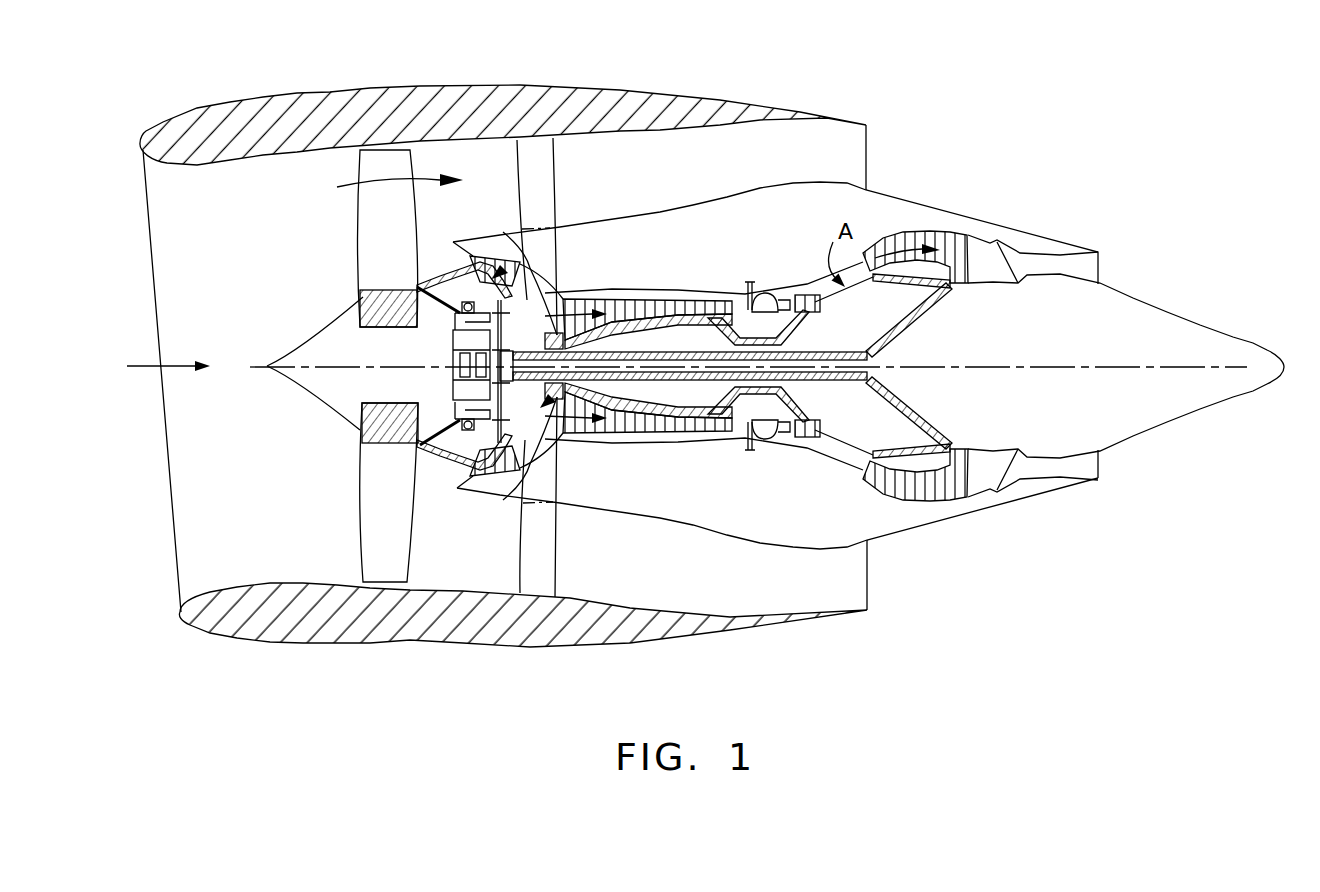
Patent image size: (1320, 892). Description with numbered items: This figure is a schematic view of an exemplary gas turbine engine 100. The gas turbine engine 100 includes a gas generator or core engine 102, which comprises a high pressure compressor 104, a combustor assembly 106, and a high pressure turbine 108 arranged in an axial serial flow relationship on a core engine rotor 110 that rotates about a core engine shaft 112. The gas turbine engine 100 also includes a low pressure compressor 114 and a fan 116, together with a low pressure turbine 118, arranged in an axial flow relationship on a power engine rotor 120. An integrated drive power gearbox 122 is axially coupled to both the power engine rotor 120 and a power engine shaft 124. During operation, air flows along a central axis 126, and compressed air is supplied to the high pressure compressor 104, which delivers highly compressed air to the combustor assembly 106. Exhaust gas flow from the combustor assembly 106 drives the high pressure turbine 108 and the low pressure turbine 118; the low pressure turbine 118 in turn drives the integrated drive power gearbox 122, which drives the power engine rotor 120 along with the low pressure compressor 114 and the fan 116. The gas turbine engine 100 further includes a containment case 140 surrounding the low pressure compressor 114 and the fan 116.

The gas turbine engine 100 is at (1018, 108).
The core engine 102 is at (749, 473).
The high pressure compressor 104 is at (573, 297).
The combustor assembly 106 is at (762, 296).
The high pressure turbine 108 is at (807, 285).
The core engine rotor 110 is at (820, 405).
The core engine shaft 112 is at (805, 330).
The low pressure compressor 114 is at (490, 255).
The fan 116 is at (360, 230).
The low pressure turbine 118 is at (943, 232).
The power engine rotor 120 is at (443, 428).
The integrated drive power gearbox 122 is at (453, 346).
The power engine shaft 124 is at (633, 362).
The central axis 126 is at (1043, 362).
The containment case 140 is at (470, 90).